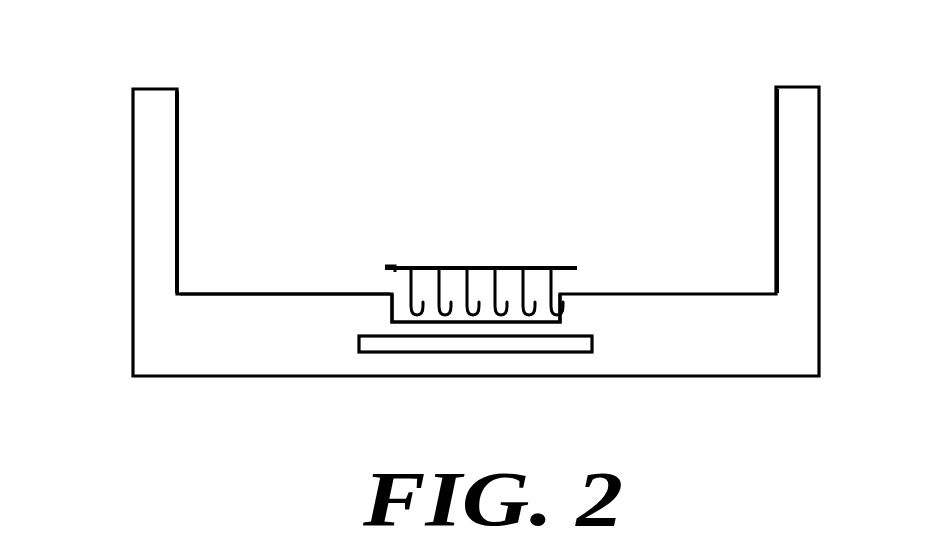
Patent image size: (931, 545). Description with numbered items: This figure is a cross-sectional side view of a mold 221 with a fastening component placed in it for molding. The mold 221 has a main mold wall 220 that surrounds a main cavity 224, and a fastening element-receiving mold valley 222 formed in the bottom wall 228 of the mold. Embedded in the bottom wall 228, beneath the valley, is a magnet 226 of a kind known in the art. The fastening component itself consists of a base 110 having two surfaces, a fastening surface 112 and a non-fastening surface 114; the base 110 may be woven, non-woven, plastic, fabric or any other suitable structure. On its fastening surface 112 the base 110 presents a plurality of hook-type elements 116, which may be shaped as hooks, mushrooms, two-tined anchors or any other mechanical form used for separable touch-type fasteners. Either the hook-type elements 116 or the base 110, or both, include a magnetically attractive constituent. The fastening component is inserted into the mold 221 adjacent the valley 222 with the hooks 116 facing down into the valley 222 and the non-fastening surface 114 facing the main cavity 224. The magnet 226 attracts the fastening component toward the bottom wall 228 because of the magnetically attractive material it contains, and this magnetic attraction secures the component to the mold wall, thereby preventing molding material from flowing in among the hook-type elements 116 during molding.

The base 110 is at (467, 263).
The fastening surface 112 is at (386, 268).
The non-fastening surface 114 is at (392, 267).
The hook-type elements 116 is at (500, 280).
The main mold wall 220 is at (808, 159).
The mold 221 is at (116, 247).
The fastening element-receiving mold valley 222 is at (560, 318).
The main cavity 224 is at (680, 133).
The magnet 226 is at (573, 342).
The bottom wall 228 is at (293, 296).